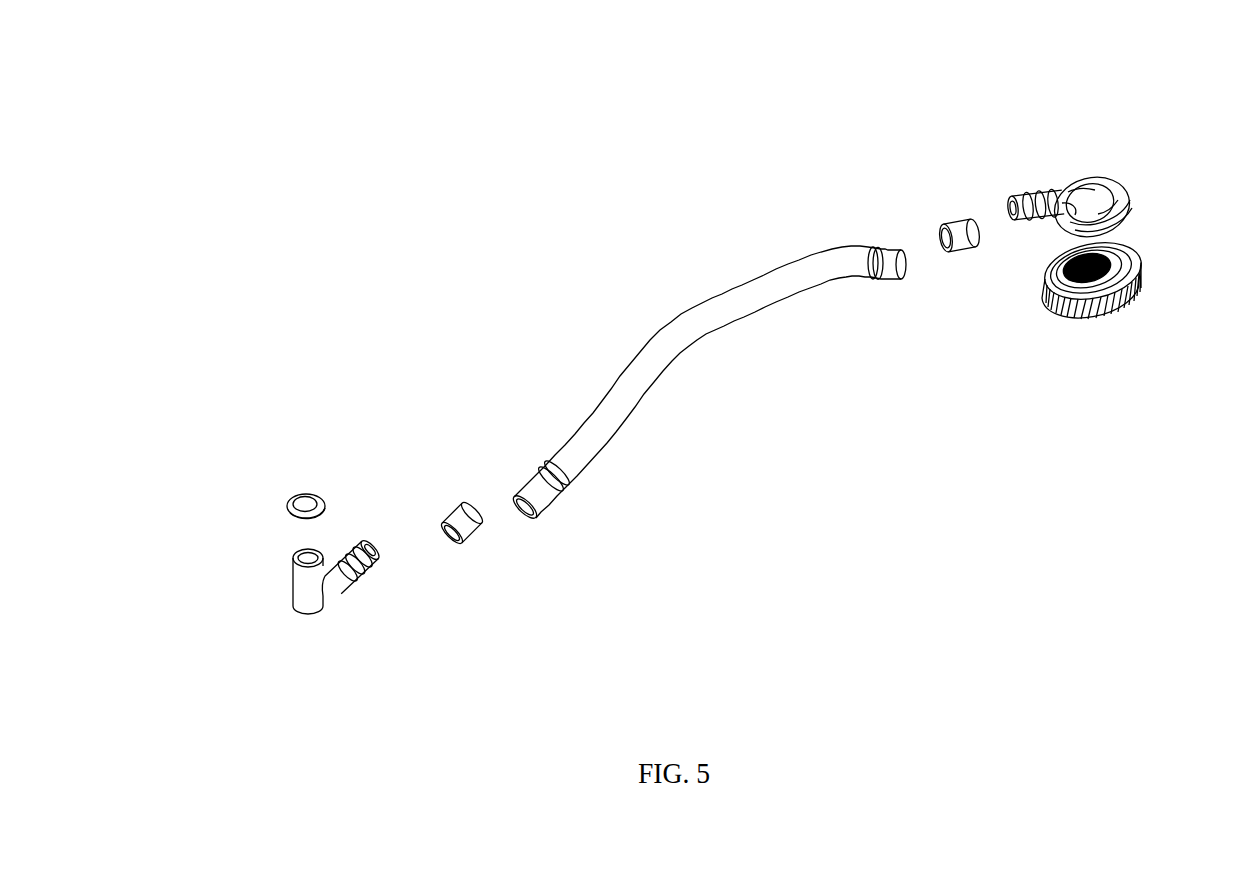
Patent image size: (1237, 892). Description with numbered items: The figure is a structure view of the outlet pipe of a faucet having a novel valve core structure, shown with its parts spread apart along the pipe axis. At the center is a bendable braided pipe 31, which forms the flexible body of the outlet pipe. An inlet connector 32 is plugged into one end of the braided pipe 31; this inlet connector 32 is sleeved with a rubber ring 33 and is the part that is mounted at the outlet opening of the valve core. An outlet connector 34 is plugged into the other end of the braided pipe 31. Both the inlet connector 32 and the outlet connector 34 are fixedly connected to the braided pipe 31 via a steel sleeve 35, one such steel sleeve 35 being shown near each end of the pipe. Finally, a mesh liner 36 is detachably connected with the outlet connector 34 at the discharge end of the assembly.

The braided pipe 31 is at (710, 323).
The inlet connector 32 is at (312, 610).
The rubber ring 33 is at (297, 505).
The outlet connector 34 is at (1100, 203).
The steel sleeve 35 is at (460, 507).
The mesh liner 36 is at (1082, 313).